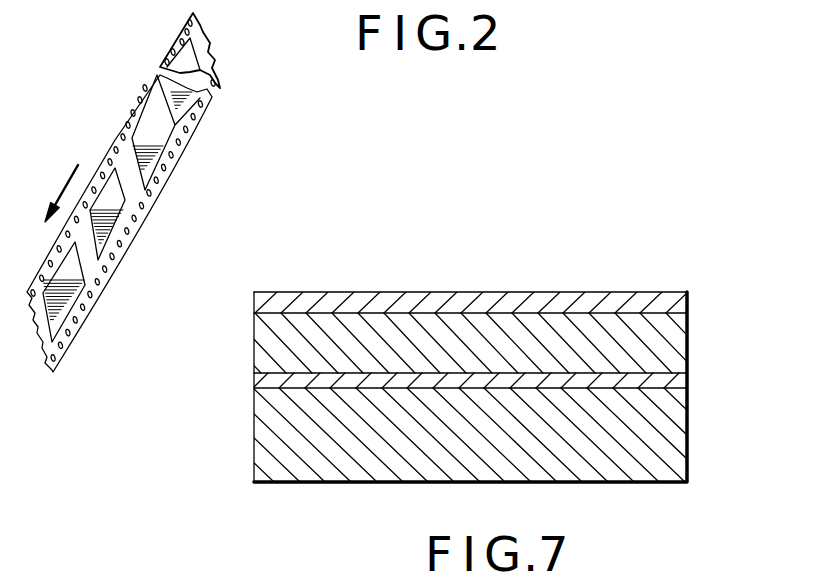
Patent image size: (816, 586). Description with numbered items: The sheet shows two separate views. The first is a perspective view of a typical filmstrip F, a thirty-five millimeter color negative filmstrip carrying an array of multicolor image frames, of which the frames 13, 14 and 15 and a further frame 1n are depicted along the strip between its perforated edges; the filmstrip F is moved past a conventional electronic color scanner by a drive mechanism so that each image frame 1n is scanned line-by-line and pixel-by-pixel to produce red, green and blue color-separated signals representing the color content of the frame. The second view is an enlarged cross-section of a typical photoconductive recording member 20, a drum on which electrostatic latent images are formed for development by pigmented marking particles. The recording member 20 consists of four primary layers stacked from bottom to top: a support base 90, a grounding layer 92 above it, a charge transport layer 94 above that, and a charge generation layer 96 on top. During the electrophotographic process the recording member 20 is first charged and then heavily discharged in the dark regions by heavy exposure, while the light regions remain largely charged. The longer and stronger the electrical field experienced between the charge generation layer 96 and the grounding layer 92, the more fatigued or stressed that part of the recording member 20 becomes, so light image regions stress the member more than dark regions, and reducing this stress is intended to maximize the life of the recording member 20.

In FIG. 2, the filmstrip F is at (122, 128).
In FIG. 2, the image frame 1n is at (193, 68).
In FIG. 2, the image frame 13 is at (70, 305).
In FIG. 2, the image frame 14 is at (117, 218).
In FIG. 2, the image frame 15 is at (160, 145).
In FIG. 7, the photoconductive recording member 20 is at (641, 273).
In FIG. 7, the support base 90 is at (675, 450).
In FIG. 7, the grounding layer 92 is at (686, 383).
In FIG. 7, the charge transport layer 94 is at (675, 343).
In FIG. 7, the charge generation layer 96 is at (683, 302).